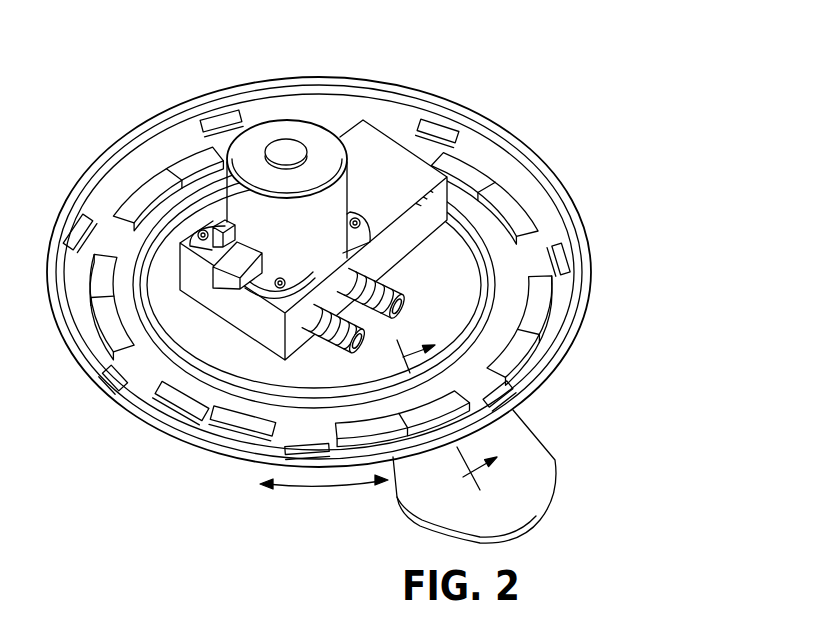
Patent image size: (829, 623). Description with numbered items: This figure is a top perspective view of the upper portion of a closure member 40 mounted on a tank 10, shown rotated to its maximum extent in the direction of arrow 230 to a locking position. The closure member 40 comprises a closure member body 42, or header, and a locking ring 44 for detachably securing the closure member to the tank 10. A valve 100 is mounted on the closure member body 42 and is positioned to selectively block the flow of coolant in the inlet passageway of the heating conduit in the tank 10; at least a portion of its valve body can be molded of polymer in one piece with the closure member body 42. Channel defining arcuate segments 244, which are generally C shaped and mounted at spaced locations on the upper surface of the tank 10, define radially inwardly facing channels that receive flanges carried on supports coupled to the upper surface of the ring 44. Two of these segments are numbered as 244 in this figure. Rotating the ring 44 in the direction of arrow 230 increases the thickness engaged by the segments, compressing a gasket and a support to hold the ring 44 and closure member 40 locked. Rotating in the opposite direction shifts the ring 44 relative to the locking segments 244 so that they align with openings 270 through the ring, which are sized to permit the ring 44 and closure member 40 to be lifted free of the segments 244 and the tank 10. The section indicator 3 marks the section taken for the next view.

The tank 10 is at (527, 491).
The closure member 40 is at (612, 227).
The closure member body 42 is at (410, 282).
The locking ring 44 is at (553, 332).
The valve 100 is at (289, 133).
The channel defining arcuate segments 244 is at (540, 303).
The openings 270 is at (513, 352).
The arrow 230 is at (323, 488).
The section line of FIG. 3 is at (436, 425).